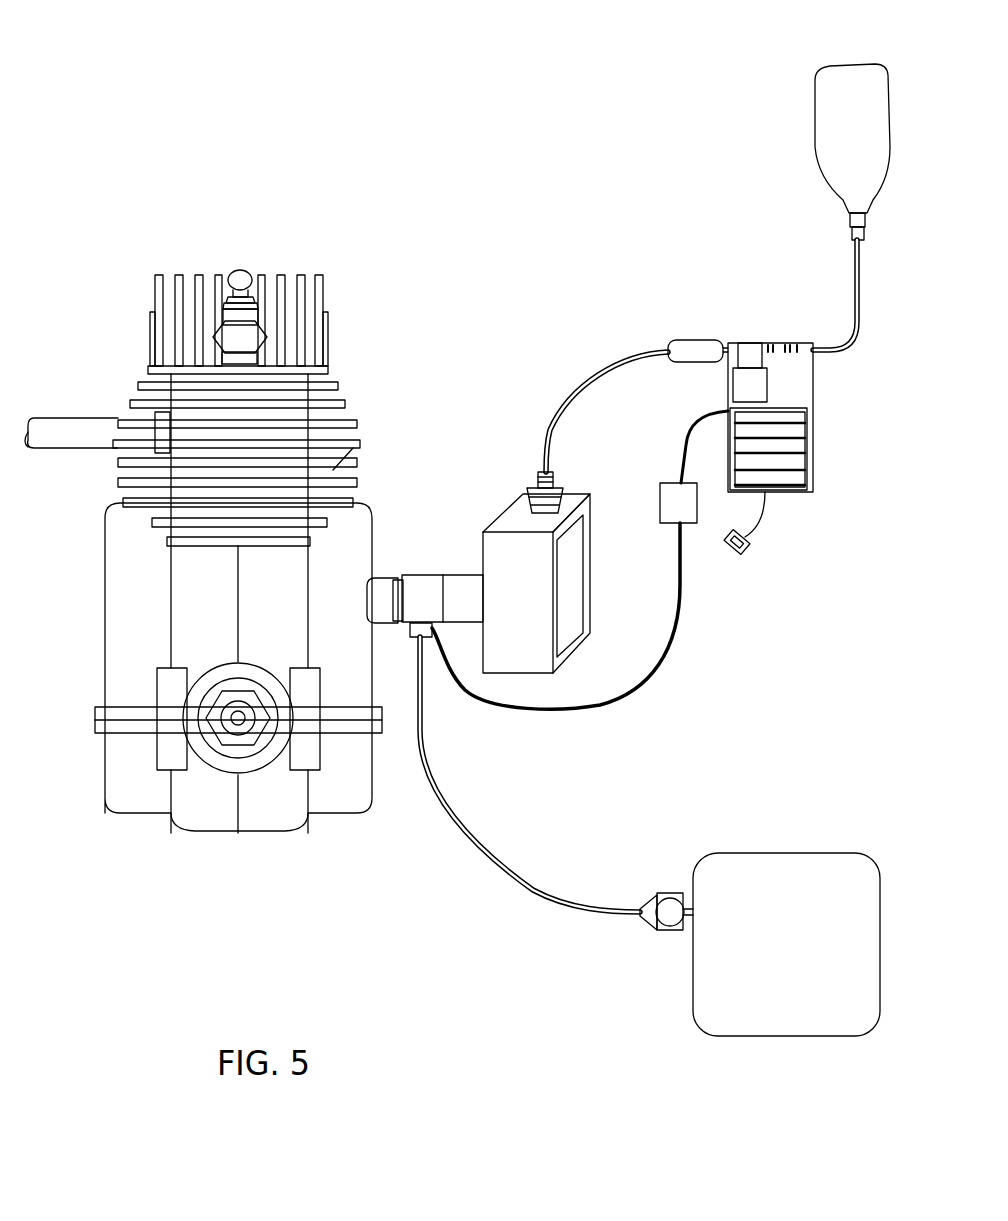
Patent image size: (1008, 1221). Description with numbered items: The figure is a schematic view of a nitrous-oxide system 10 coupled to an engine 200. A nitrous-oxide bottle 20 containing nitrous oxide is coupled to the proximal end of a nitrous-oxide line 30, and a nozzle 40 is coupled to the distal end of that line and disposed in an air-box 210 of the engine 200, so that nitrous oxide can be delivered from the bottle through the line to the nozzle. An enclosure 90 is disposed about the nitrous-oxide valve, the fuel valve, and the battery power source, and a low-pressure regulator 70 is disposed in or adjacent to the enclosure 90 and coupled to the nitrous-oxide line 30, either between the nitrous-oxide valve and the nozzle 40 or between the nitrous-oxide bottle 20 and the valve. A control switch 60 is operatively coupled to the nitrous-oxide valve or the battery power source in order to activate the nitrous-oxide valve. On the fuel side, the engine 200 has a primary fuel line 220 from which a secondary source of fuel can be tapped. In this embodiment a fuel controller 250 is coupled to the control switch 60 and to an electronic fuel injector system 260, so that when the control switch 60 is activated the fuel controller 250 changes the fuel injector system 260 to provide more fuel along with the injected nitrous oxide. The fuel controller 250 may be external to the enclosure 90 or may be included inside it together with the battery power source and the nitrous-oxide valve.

The engine 200 is at (208, 125).
The nitrous-oxide system 10 is at (716, 225).
The nitrous-oxide bottle 20 is at (815, 102).
The nitrous-oxide line 30 is at (595, 372).
The nozzle 40 is at (567, 490).
The control switch 60 is at (745, 552).
The low-pressure regulator 70 is at (698, 340).
The enclosure 90 is at (812, 390).
The air-box 210 is at (513, 508).
The primary fuel line 220 is at (553, 900).
The fuel controller 250 is at (690, 520).
The electronic fuel injector system 260 is at (410, 637).